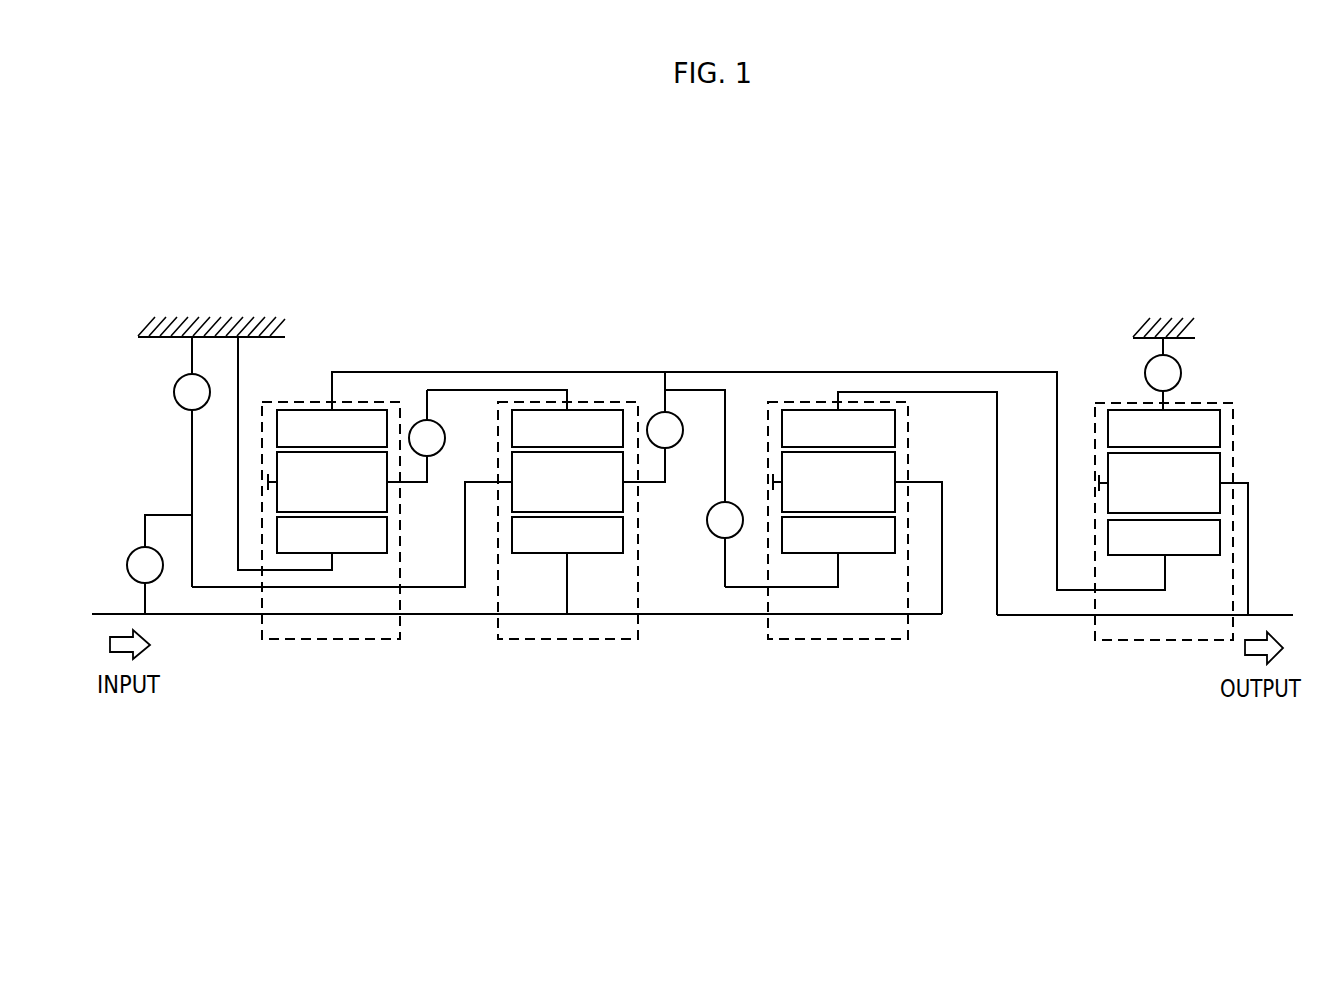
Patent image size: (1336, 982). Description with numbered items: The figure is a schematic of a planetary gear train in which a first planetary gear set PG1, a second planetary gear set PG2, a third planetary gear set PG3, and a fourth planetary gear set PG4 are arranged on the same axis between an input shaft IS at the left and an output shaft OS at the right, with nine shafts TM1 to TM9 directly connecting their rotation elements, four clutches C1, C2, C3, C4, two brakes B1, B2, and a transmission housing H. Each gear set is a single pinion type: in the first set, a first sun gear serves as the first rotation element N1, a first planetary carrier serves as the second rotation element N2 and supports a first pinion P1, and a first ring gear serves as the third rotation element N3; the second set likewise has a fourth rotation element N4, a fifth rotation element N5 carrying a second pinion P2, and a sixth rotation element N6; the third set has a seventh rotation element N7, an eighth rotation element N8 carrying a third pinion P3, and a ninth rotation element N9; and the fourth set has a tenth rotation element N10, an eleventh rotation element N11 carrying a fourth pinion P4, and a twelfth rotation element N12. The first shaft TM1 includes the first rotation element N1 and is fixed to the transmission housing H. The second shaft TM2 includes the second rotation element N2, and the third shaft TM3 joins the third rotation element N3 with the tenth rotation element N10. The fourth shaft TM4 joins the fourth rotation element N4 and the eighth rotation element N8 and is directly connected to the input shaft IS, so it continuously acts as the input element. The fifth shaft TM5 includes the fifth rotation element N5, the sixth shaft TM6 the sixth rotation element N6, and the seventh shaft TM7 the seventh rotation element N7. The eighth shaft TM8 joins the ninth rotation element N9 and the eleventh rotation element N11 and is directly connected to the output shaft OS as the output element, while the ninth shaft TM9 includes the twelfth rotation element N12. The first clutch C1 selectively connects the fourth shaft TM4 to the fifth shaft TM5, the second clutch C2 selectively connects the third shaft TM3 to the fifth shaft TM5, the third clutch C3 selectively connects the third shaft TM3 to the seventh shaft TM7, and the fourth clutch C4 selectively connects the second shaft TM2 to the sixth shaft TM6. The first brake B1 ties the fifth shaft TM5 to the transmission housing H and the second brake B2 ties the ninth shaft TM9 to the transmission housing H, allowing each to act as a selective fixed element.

The input shaft IS is at (183, 616).
The output shaft OS is at (1272, 614).
The transmission housing H is at (238, 318).
The first brake B1 is at (192, 462).
The second brake B2 is at (1163, 364).
The first clutch C1 is at (159, 564).
The second clutch C2 is at (653, 427).
The third clutch C3 is at (704, 488).
The fourth clutch C4 is at (427, 438).
The first shaft TM1 is at (283, 573).
The second shaft TM2 is at (434, 468).
The third shaft TM3 is at (645, 370).
The fourth shaft TM4 is at (705, 618).
The fifth shaft TM5 is at (430, 593).
The sixth shaft TM6 is at (522, 388).
The seventh shaft TM7 is at (845, 574).
The eighth shaft TM8 is at (1001, 432).
The ninth shaft TM9 is at (1156, 398).
The first planetary gear set PG1 is at (331, 568).
The second planetary gear set PG2 is at (568, 568).
The third planetary gear set PG3 is at (838, 568).
The fourth planetary gear set PG4 is at (1164, 568).
The first rotation element N1 is at (332, 535).
The second rotation element N2 is at (413, 483).
The third rotation element N3 is at (332, 428).
The fourth rotation element N4 is at (567, 565).
The fifth rotation element N5 is at (655, 484).
The sixth rotation element N6 is at (567, 428).
The seventh rotation element N7 is at (838, 535).
The eighth rotation element N8 is at (925, 482).
The ninth rotation element N9 is at (838, 428).
The tenth rotation element N10 is at (1164, 537).
The eleventh rotation element N11 is at (1240, 482).
The twelfth rotation element N12 is at (1164, 428).
The first pinion P1 is at (327, 482).
The second pinion P2 is at (567, 482).
The third pinion P3 is at (834, 482).
The fourth pinion P4 is at (1159, 483).